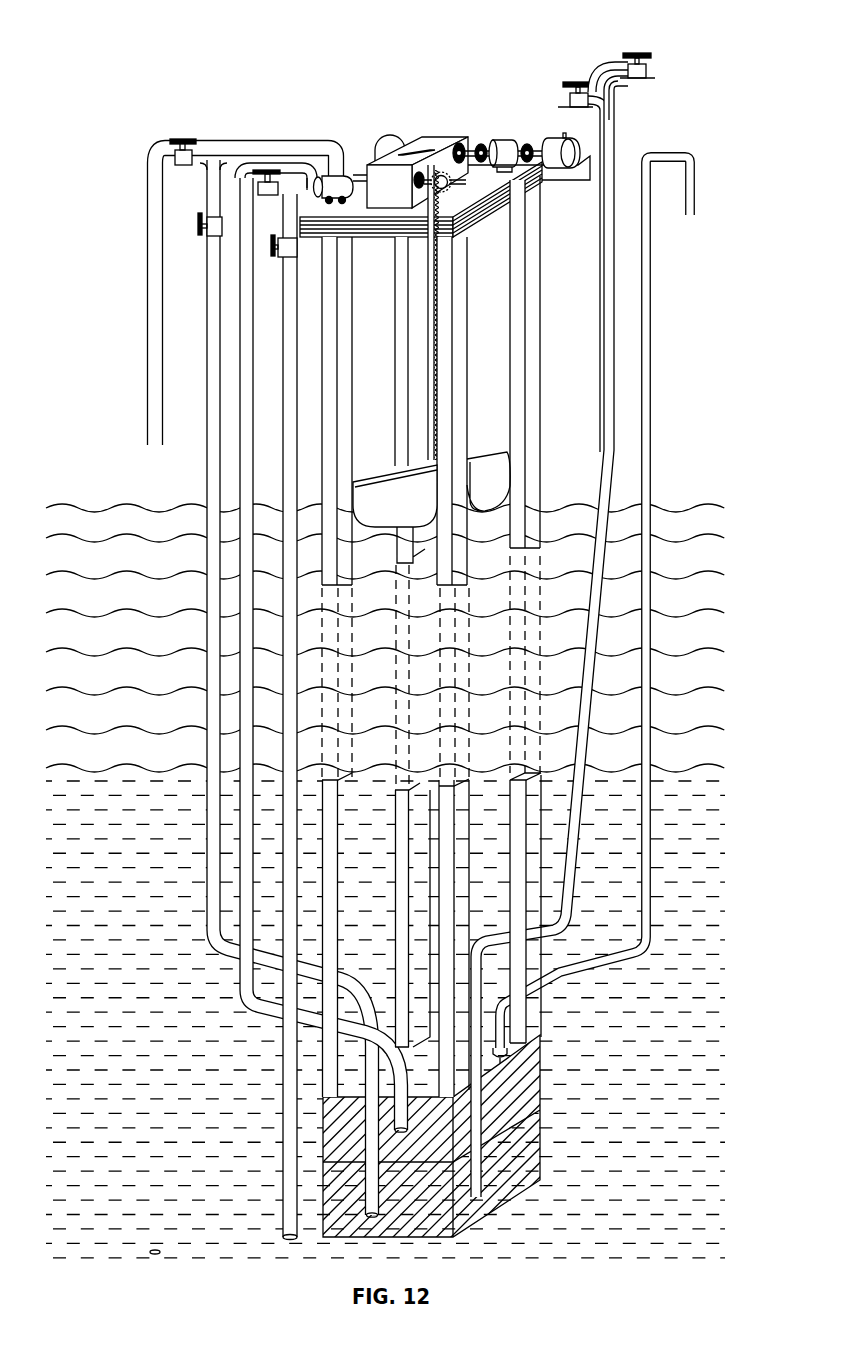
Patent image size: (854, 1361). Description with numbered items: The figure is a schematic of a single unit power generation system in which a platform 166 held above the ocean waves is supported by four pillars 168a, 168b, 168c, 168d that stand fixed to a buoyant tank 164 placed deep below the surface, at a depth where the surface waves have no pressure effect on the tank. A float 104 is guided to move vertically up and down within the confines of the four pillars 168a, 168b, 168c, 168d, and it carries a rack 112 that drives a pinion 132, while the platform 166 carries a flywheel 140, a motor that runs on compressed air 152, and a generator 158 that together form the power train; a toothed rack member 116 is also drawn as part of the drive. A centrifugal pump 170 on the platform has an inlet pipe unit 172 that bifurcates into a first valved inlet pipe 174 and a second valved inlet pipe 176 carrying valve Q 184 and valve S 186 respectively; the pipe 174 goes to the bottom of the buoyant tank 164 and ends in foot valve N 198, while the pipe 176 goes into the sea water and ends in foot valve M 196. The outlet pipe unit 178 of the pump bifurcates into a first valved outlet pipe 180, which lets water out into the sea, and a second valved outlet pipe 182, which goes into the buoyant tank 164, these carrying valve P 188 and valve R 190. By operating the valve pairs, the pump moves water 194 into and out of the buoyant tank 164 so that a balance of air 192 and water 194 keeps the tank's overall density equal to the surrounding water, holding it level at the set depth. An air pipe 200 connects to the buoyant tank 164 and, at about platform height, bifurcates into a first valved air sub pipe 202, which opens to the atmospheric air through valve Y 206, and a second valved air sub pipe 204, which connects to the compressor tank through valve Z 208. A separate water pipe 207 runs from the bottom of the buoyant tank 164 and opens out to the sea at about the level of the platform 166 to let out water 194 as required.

The float 104 is at (473, 460).
The rack 112 is at (445, 140).
The toothed rack 116 is at (430, 172).
The pinion 132 is at (490, 137).
The flywheel 140 is at (400, 140).
The motor that runs on compressed air 152 is at (507, 140).
The generator 158 is at (568, 148).
The buoyant tank 164 is at (541, 1050).
The platform 166 is at (480, 222).
The pillar 168a is at (532, 333).
The pillar 168b is at (470, 330).
The pillar 168c is at (350, 412).
The pillar 168d is at (397, 372).
The centrifugal pump 170 is at (326, 178).
The inlet pipe unit 172 is at (310, 182).
The first valved inlet pipe 174 is at (238, 352).
The second valved inlet pipe 176 is at (280, 416).
The outlet pipe unit 178 is at (238, 166).
The first valved outlet pipe 180 is at (148, 352).
The second valved outlet pipe 182 is at (208, 421).
The valve Q 184 is at (258, 168).
The valve S 186 is at (295, 245).
The valve P 188 is at (178, 140).
The valve R 190 is at (197, 226).
The air 192 is at (532, 1074).
The water 194 is at (541, 1152).
The foot valve M 196 is at (284, 1240).
The foot valve N 198 is at (357, 1240).
The air pipe 200 is at (616, 453).
The first valved air sub pipe 202 is at (648, 62).
The second valved air sub pipe 204 is at (565, 92).
The valve Y 206 is at (640, 80).
The water pipe 207 is at (650, 410).
The valve Z 208 is at (585, 84).